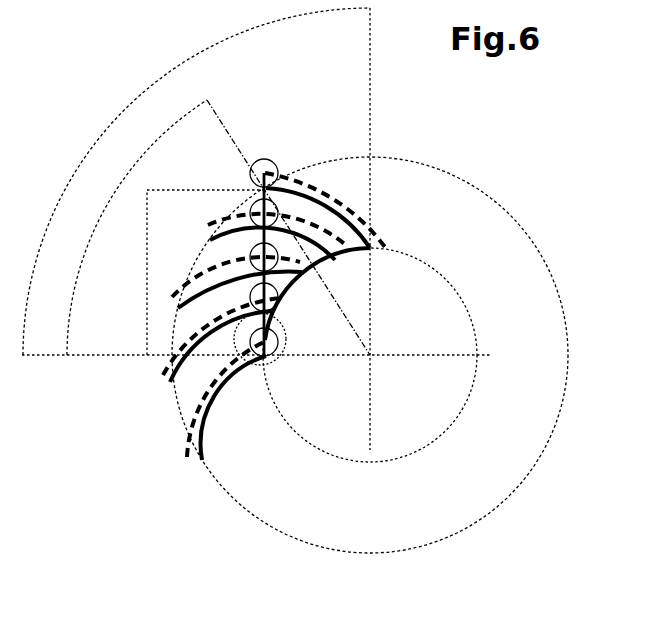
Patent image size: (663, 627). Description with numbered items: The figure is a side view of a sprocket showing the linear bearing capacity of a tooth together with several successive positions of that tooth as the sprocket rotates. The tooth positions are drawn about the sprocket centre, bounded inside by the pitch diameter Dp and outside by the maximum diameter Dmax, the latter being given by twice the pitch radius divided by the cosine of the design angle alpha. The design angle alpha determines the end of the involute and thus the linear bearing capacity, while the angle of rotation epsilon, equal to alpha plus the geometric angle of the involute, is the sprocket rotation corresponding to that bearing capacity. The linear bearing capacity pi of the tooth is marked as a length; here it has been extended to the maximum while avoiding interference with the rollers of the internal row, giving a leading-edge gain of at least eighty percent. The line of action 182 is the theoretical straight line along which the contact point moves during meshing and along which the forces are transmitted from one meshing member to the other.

The line of action 182 is at (236, 348).
The maximum diameter of the sprocket Dmax is at (483, 138).
The pitch diameter of the sprocket Dp is at (413, 257).
The linear bearing capacity of a tooth pi is at (192, 272).
The design angle alpha is at (210, 227).
The angle of rotation of the sprocket epsilon is at (196, 181).